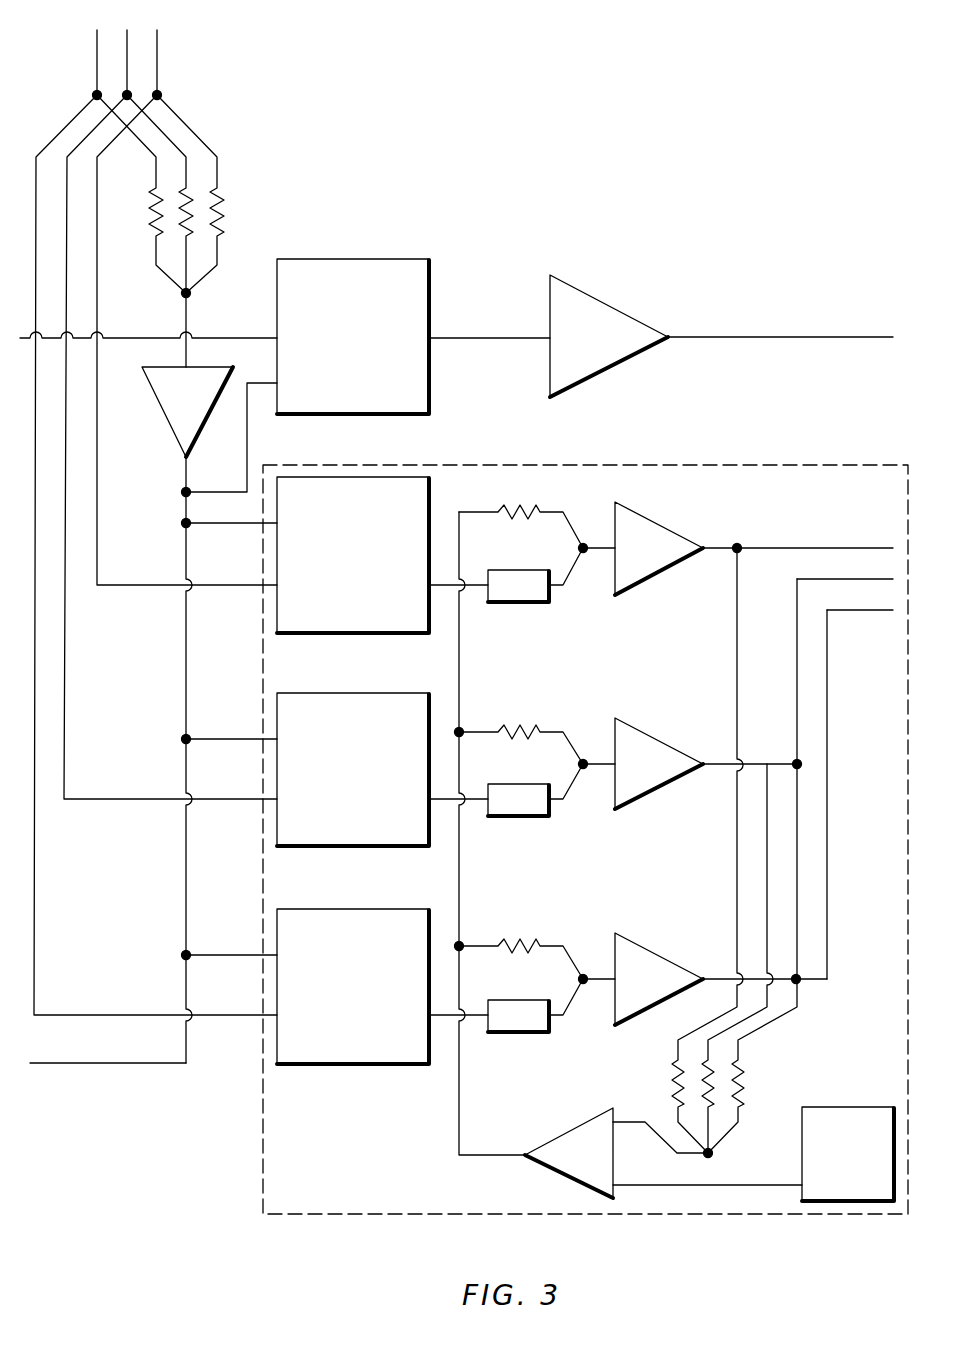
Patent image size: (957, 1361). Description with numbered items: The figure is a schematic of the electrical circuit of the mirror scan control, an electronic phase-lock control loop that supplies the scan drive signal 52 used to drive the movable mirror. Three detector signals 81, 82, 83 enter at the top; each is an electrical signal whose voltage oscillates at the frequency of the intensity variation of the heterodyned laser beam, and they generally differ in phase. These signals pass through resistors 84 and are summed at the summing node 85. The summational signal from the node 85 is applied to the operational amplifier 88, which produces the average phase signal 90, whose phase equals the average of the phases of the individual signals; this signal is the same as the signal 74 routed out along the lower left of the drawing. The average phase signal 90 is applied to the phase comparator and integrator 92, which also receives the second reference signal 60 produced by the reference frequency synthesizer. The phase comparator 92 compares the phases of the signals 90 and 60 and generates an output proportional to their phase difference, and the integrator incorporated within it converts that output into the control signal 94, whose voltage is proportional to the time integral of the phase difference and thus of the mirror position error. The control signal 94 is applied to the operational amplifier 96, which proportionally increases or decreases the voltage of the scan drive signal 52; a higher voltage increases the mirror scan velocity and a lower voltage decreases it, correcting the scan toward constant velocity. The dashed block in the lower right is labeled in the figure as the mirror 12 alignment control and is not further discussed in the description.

The mirror alignment control 12 is at (585, 827).
The scan drive signal 52 is at (770, 337).
The second reference signal 60 is at (151, 338).
The signal 74 is at (136, 1066).
The signal 81 is at (97, 46).
The signal 82 is at (127, 46).
The input line 83 is at (157, 46).
The resistors 84 is at (160, 190).
The summing node 85 is at (190, 297).
The operational amplifier 88 is at (161, 407).
The average phase signal 90 is at (186, 476).
The phase comparator and integrator 92 is at (383, 259).
The control signal 94 is at (486, 338).
The operational amplifier 96 is at (620, 312).